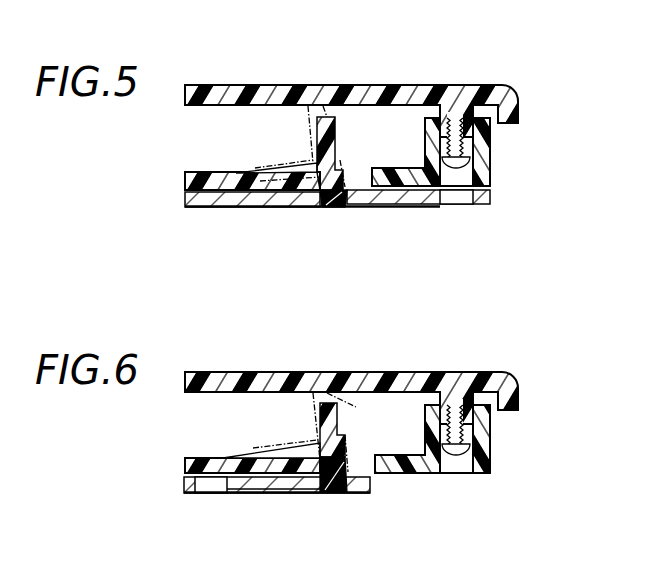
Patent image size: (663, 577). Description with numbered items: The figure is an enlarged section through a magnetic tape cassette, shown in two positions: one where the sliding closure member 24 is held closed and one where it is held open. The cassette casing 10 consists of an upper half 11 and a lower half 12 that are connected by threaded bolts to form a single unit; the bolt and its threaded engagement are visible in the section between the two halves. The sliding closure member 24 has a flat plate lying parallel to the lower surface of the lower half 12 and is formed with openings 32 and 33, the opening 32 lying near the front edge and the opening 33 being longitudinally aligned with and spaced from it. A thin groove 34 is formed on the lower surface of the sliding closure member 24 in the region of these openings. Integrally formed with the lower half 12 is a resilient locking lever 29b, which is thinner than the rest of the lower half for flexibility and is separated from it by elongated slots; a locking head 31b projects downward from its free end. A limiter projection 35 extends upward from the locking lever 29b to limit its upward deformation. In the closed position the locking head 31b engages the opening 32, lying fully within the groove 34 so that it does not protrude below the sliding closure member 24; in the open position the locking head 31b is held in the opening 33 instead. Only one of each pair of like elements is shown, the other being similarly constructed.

In FIG. 5, the cassette casing 10 is at (440, 64).
In FIG. 6, the cassette casing 10 is at (422, 369).
In FIG. 5, the upper half 11 is at (400, 90).
In FIG. 6, the upper half 11 is at (370, 382).
In FIG. 5, the lower half 12 is at (421, 187).
In FIG. 6, the lower half 12 is at (402, 474).
In FIG. 5, the sliding closure member 24 is at (254, 206).
In FIG. 6, the sliding closure member 24 is at (247, 491).
In FIG. 5, the locking lever 29b is at (262, 166).
In FIG. 6, the locking lever 29b is at (283, 443).
In FIG. 5, the locking head 31b is at (347, 198).
In FIG. 6, the locking head 31b is at (338, 488).
In FIG. 5, the opening 32 is at (470, 204).
In FIG. 6, the opening 32 is at (327, 494).
In FIG. 5, the opening 33 is at (320, 207).
In FIG. 6, the opening 33 is at (223, 494).
In FIG. 5, the thin groove 34 is at (383, 208).
In FIG. 6, the thin groove 34 is at (280, 494).
In FIG. 5, the limiter projection 35 is at (336, 132).
In FIG. 6, the limiter projection 35 is at (340, 402).